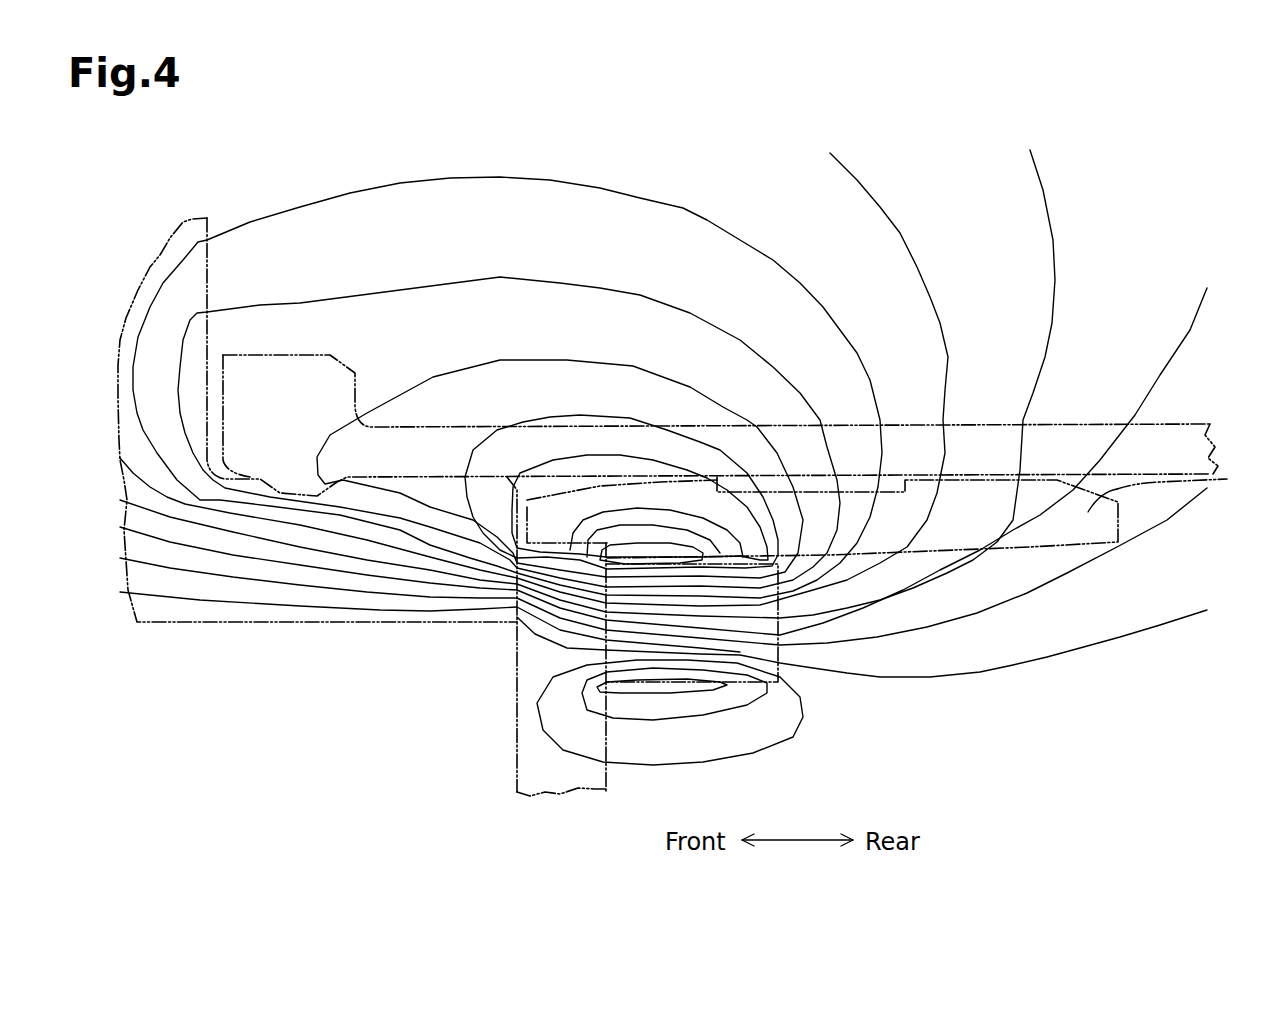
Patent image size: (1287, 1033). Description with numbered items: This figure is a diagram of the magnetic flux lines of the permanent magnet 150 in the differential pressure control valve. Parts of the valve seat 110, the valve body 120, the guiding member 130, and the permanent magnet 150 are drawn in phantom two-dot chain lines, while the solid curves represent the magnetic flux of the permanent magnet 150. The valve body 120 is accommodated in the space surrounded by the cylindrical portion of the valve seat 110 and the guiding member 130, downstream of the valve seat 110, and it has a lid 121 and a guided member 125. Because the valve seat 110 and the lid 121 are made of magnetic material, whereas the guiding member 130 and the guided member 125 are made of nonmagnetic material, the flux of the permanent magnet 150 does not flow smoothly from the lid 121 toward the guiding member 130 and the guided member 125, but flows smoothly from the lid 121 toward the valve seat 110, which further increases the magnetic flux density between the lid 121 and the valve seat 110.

The valve seat 110 is at (305, 622).
The valve body 120 is at (518, 705).
The lid 121 is at (543, 775).
The guided member 125 is at (1228, 478).
The guiding member 130 is at (1150, 427).
The permanent magnet 150 is at (779, 668).